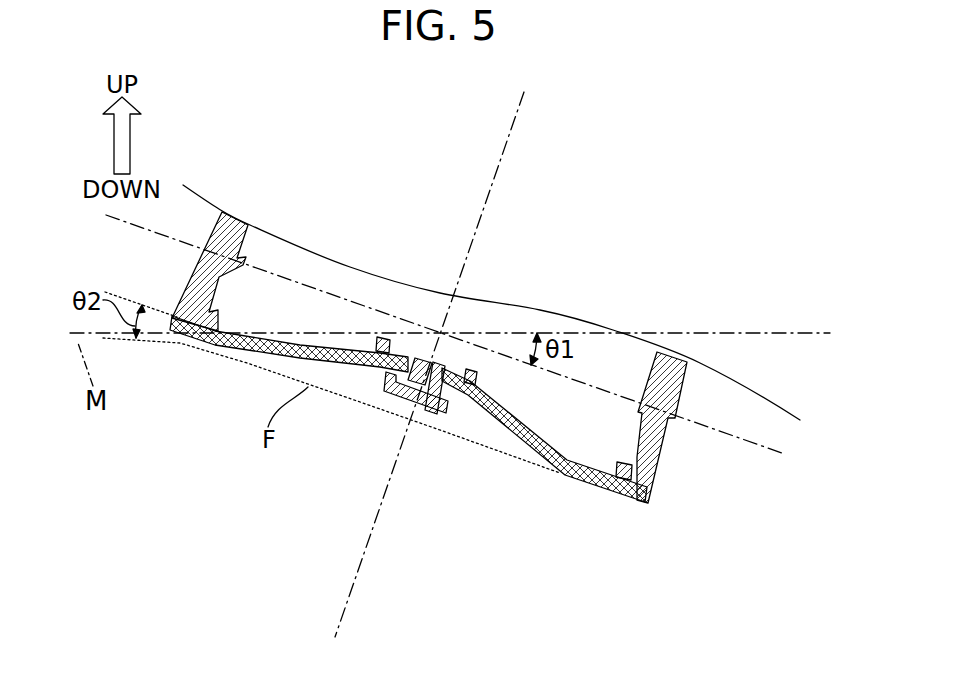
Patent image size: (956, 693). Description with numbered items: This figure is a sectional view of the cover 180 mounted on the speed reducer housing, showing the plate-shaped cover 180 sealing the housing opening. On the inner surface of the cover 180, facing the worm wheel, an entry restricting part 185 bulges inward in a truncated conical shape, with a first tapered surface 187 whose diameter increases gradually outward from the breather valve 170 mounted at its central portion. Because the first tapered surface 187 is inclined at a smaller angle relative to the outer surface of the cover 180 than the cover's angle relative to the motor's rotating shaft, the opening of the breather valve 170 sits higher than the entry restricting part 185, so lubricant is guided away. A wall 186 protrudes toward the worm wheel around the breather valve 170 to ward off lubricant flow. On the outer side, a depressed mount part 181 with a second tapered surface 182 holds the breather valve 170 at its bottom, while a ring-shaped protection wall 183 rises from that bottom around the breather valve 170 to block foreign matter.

The breather valve 170 is at (412, 394).
The cover 180 is at (638, 504).
The mount part 181 is at (515, 447).
The second tapered surface 182 is at (336, 364).
The protection wall 183 is at (439, 414).
The entry restricting part 185 is at (553, 422).
The wall 186 is at (478, 376).
The first tapered surface 187 is at (337, 349).